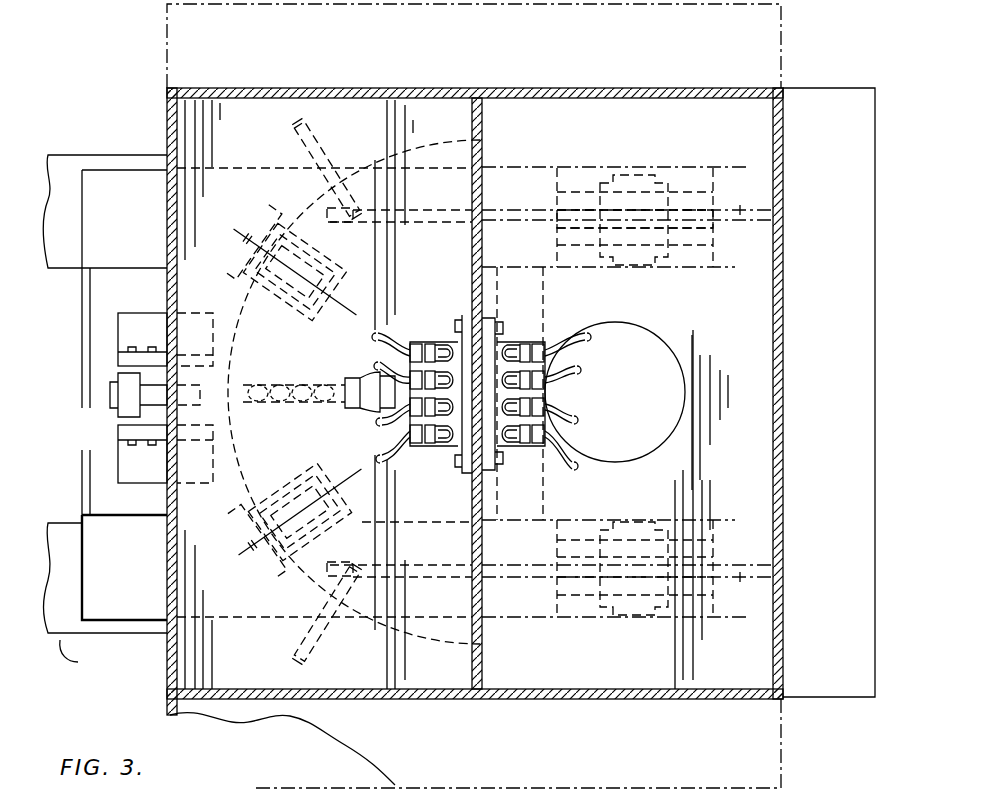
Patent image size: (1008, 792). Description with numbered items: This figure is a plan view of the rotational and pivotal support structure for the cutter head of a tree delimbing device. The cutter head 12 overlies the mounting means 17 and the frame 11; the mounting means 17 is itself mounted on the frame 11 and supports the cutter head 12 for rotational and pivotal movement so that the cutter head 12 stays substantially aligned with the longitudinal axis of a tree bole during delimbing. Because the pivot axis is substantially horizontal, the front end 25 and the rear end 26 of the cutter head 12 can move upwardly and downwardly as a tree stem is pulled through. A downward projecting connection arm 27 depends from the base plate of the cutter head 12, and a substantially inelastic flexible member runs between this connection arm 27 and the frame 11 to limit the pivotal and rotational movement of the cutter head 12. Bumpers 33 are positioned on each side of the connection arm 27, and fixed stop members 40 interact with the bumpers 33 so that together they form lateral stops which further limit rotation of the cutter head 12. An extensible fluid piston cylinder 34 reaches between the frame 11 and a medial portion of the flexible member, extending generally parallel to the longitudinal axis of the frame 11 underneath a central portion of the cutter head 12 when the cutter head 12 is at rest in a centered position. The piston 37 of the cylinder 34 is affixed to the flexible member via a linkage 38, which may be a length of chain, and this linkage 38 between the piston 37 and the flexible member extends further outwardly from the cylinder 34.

The frame 11 is at (80, 664).
The cutter head 12 is at (785, 303).
The mounting means 17 is at (592, 135).
The front end 25 is at (785, 442).
The rear end 26 is at (140, 518).
The connection arm 27 is at (115, 420).
The bumpers 33 is at (137, 313).
The fluid piston cylinder 34 is at (352, 418).
The piston 37 is at (330, 405).
The linkage 38 is at (282, 308).
The stop members 40 is at (350, 118).